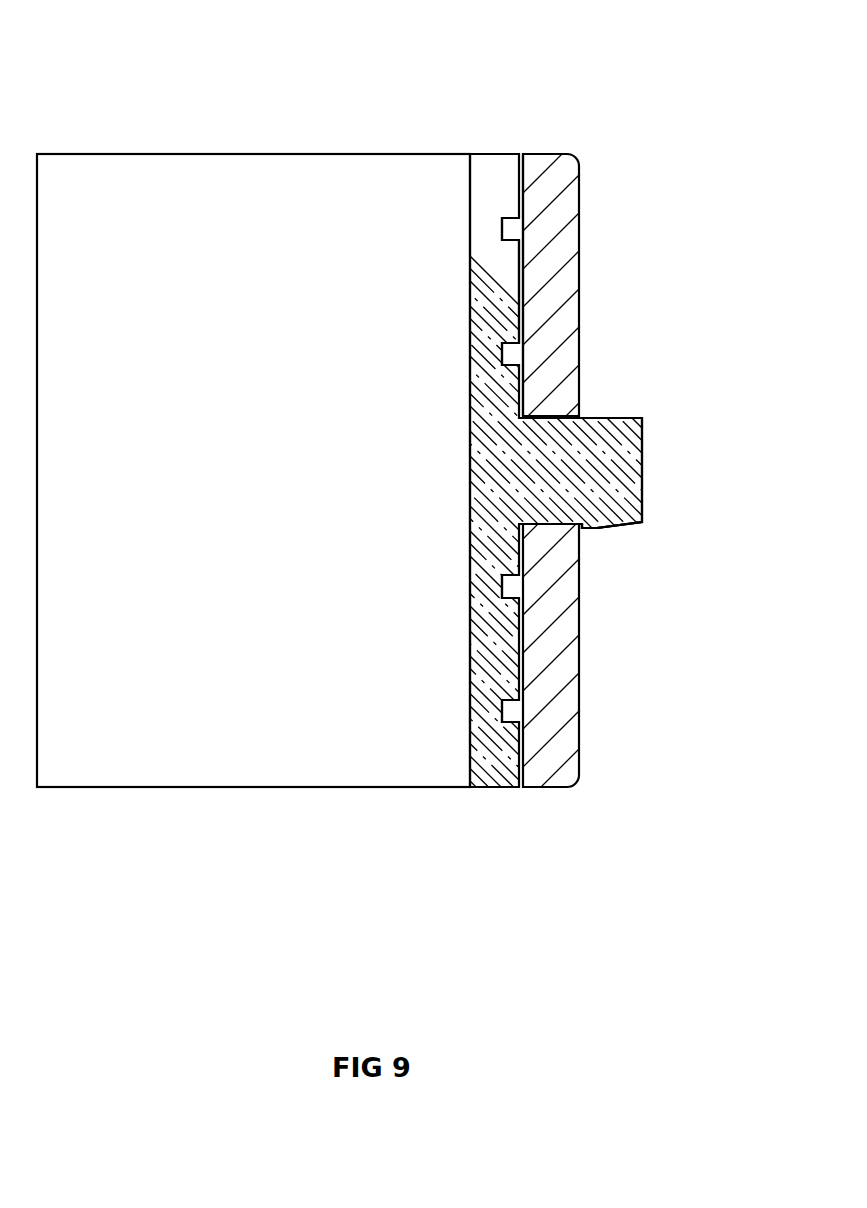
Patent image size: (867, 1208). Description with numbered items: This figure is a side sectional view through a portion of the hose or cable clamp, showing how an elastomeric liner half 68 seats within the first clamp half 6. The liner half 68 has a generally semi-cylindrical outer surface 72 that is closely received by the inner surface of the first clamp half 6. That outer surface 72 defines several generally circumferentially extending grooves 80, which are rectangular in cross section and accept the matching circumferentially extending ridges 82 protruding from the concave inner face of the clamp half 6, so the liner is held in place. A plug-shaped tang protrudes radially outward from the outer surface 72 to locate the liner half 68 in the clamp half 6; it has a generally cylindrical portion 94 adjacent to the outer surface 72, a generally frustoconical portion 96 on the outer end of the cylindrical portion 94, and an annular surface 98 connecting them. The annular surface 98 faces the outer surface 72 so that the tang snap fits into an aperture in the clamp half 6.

The liner half 68 is at (485, 153).
The first clamp half 6 is at (580, 640).
The semi-cylindrical outer surface 72 is at (523, 282).
The circumferentially extending ridges 82 is at (522, 341).
The generally cylindrical portion 94 is at (556, 414).
The generally frustoconical portion 96 is at (620, 416).
The annular surface 98 is at (587, 526).
The circumferentially extending grooves 80 is at (511, 244).